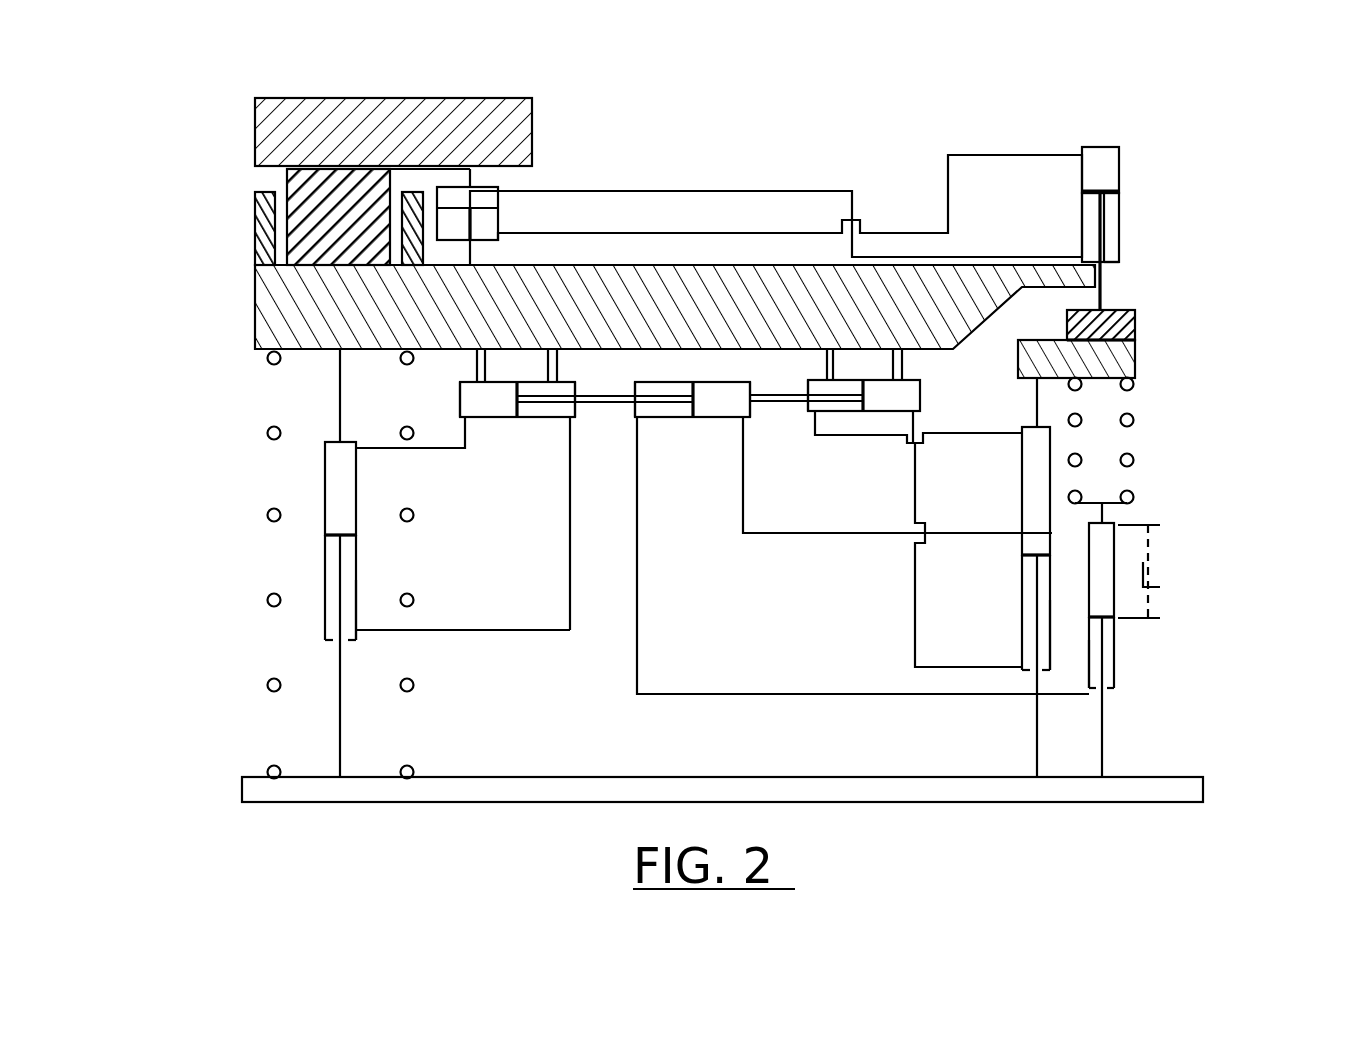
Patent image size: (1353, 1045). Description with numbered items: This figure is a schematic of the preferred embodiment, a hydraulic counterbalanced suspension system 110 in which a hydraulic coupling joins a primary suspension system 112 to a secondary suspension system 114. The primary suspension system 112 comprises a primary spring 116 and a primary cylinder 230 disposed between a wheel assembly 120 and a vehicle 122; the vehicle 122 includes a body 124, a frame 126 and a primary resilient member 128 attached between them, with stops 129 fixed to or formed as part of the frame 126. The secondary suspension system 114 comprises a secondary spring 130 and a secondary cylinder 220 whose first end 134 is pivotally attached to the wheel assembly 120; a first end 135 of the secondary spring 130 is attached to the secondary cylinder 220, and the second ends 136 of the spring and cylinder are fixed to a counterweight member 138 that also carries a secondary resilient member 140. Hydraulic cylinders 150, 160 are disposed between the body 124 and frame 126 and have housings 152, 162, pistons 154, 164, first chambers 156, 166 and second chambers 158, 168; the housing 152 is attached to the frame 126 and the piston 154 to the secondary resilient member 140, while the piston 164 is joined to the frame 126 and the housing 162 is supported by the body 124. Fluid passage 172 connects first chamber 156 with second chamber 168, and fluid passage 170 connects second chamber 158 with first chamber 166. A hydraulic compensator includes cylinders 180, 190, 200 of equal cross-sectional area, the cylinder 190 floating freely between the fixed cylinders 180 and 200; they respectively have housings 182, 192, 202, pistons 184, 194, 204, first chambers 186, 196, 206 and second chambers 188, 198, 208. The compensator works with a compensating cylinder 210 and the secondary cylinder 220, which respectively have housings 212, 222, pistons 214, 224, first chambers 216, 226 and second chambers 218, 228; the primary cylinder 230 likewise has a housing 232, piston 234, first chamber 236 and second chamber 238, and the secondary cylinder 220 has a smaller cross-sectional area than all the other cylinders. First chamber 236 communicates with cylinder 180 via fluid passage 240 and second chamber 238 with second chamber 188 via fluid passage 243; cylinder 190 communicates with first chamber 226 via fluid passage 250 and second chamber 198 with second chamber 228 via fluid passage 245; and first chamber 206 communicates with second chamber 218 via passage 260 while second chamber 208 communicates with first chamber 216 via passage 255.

The hydraulic counterbalanced suspension system 110 is at (726, 92).
The primary suspension system 112 is at (178, 770).
The secondary suspension system 114 is at (1220, 562).
The primary spring 116 is at (266, 434).
The wheel assembly 120 is at (498, 760).
The vehicle 122 is at (215, 90).
The body 124 is at (252, 127).
The frame 126 is at (258, 307).
The primary resilient member 128 is at (284, 172).
The stops 129 is at (258, 227).
The secondary spring 130 is at (1134, 423).
The first end 134 is at (1140, 759).
The first end 135 is at (1153, 496).
The second ends 136 is at (1162, 392).
The counterweight member 138 is at (1135, 363).
The secondary resilient member 140 is at (1135, 322).
The hydraulic cylinder 150 is at (1122, 202).
The housing 152 is at (1120, 165).
The piston 154 is at (1105, 222).
The first chamber 156 is at (1095, 155).
The second chamber 158 is at (1117, 243).
The hydraulic cylinder 160 is at (498, 188).
The housing 162 is at (498, 192).
The piston 164 is at (472, 255).
The first chamber 166 is at (488, 197).
The second chamber 168 is at (488, 225).
The fluid passage 170 is at (762, 191).
The fluid passage 172 is at (968, 155).
The cylinder 180 is at (573, 417).
The housing 182 is at (477, 418).
The piston 184 is at (540, 396).
The first chamber 186 is at (477, 397).
The second chamber 188 is at (546, 433).
The cylinder 190 is at (743, 417).
The housing 192 is at (640, 417).
The piston 194 is at (675, 446).
The first chamber 196 is at (712, 390).
The second chamber 198 is at (647, 388).
The cylinder 200 is at (922, 400).
The housing 202 is at (920, 385).
The piston 204 is at (800, 396).
The first chamber 206 is at (887, 393).
The second chamber 208 is at (806, 374).
The compensating cylinder 210 is at (1018, 572).
The housing 212 is at (1020, 480).
The piston 214 is at (1035, 610).
The first chamber 216 is at (1022, 442).
The second chamber 218 is at (1030, 635).
The secondary cylinder 220 is at (1116, 657).
The housing 222 is at (1104, 648).
The piston 224 is at (1116, 640).
The first chamber 226 is at (1170, 556).
The second chamber 228 is at (1110, 672).
The primary cylinder 230 is at (323, 517).
The housing 232 is at (323, 480).
The piston 234 is at (338, 693).
The first chamber 236 is at (325, 455).
The second chamber 238 is at (328, 605).
The fluid passage 240 is at (437, 452).
The fluid passage 243 is at (463, 630).
The fluid passage 245 is at (643, 607).
The fluid passage 250 is at (840, 540).
The passage 255 is at (893, 437).
The passage 260 is at (913, 628).